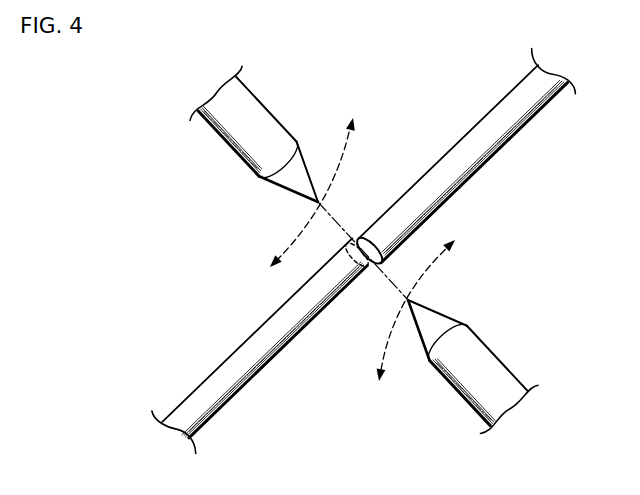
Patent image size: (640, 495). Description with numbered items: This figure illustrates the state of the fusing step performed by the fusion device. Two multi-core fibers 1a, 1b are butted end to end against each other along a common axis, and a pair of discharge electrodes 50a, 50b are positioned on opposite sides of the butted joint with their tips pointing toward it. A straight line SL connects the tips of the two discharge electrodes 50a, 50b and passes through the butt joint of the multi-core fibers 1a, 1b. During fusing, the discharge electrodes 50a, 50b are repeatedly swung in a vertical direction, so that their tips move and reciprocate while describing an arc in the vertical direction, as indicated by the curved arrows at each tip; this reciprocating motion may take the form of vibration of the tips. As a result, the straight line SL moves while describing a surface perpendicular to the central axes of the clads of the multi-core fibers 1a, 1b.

The multi-core fiber 1a is at (215, 376).
The multi-core fiber 1b is at (497, 108).
The discharge electrode 50a is at (266, 143).
The discharge electrode 50b is at (471, 356).
The straight line SL is at (330, 214).